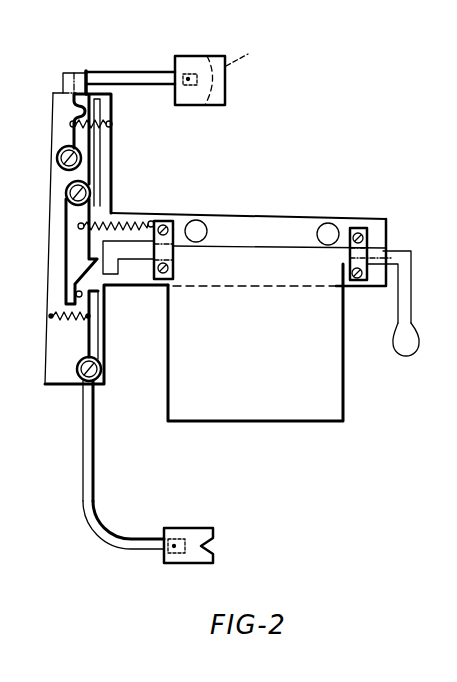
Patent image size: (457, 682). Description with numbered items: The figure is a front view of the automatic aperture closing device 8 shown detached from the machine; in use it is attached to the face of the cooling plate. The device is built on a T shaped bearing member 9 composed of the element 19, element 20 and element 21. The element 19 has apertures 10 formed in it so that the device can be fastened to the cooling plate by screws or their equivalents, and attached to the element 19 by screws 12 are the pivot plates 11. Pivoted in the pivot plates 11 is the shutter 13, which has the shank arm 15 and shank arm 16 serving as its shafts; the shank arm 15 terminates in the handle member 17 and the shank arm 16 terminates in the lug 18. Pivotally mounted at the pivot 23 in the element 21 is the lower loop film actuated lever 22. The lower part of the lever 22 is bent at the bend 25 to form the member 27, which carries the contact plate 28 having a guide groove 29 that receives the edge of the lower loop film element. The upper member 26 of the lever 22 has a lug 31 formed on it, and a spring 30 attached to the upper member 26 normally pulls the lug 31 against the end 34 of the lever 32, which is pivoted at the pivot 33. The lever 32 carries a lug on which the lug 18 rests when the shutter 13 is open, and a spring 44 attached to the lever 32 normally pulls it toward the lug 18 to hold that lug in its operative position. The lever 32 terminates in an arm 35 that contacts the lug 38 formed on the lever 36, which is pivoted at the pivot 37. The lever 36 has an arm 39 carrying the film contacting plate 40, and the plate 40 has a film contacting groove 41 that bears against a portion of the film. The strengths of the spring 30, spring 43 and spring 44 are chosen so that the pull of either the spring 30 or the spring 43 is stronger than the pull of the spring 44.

The automatic aperture closing device 8 is at (288, 228).
The T shaped bearing member 9 is at (372, 225).
The apertures 10 is at (198, 220).
The pivot plates 11 is at (172, 252).
The screws 12 is at (165, 222).
The shutter 13 is at (255, 342).
The shank arm 15 is at (390, 257).
The shank arm 16 is at (125, 244).
The handle member 17 is at (405, 314).
The lug 18 is at (114, 268).
The element 19 is at (253, 213).
The element 20 is at (108, 184).
The element 21 is at (100, 345).
The lower loop film actuated lever 22 is at (87, 440).
The pivot 23 is at (102, 373).
The bend 25 is at (87, 487).
The upper member 26 is at (86, 343).
The member 27 is at (130, 545).
The contact plate 28 is at (194, 530).
The guide groove 29 is at (212, 546).
The spring 30 is at (69, 323).
The lug 31 is at (82, 290).
The lever 32 is at (72, 215).
The pivot 33 is at (64, 192).
The end 34 is at (66, 290).
The arm 35 is at (92, 143).
The lever 36 is at (66, 117).
The pivot 37 is at (57, 155).
The lug 38 is at (75, 103).
The arm 39 is at (120, 75).
The film contacting plate 40 is at (188, 62).
The film contacting groove 41 is at (246, 55).
The spring 43 is at (107, 125).
The spring 44 is at (123, 220).